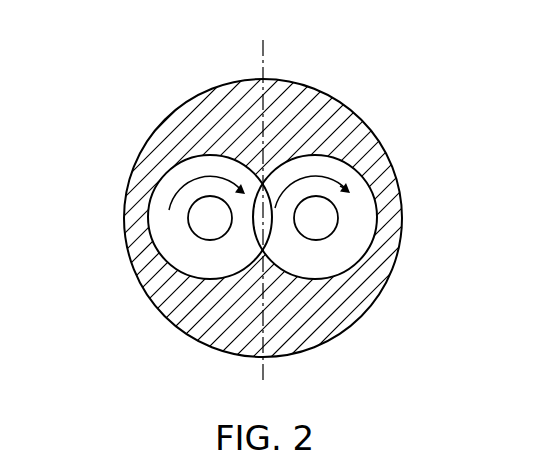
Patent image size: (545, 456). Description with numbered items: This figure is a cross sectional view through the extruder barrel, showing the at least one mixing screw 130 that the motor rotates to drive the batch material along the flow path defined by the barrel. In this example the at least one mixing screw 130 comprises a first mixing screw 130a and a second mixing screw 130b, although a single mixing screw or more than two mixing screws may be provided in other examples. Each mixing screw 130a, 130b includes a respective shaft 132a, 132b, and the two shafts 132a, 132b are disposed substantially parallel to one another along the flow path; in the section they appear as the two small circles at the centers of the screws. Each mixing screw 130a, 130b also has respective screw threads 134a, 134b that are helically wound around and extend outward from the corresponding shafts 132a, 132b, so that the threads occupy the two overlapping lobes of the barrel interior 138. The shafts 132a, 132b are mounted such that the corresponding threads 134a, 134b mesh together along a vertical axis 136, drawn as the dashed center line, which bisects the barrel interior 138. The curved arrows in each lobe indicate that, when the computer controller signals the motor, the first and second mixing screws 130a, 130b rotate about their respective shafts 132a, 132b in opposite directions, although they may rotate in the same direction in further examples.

The mixing screw 130 is at (148, 172).
The first mixing screw 130a is at (145, 200).
The second mixing screw 130b is at (383, 200).
The shaft 132a is at (197, 218).
The shaft 132b is at (330, 218).
The screw threads 134a is at (178, 252).
The screw threads 134b is at (350, 250).
The vertical axis 136 is at (263, 60).
The barrel interior 138 is at (348, 177).